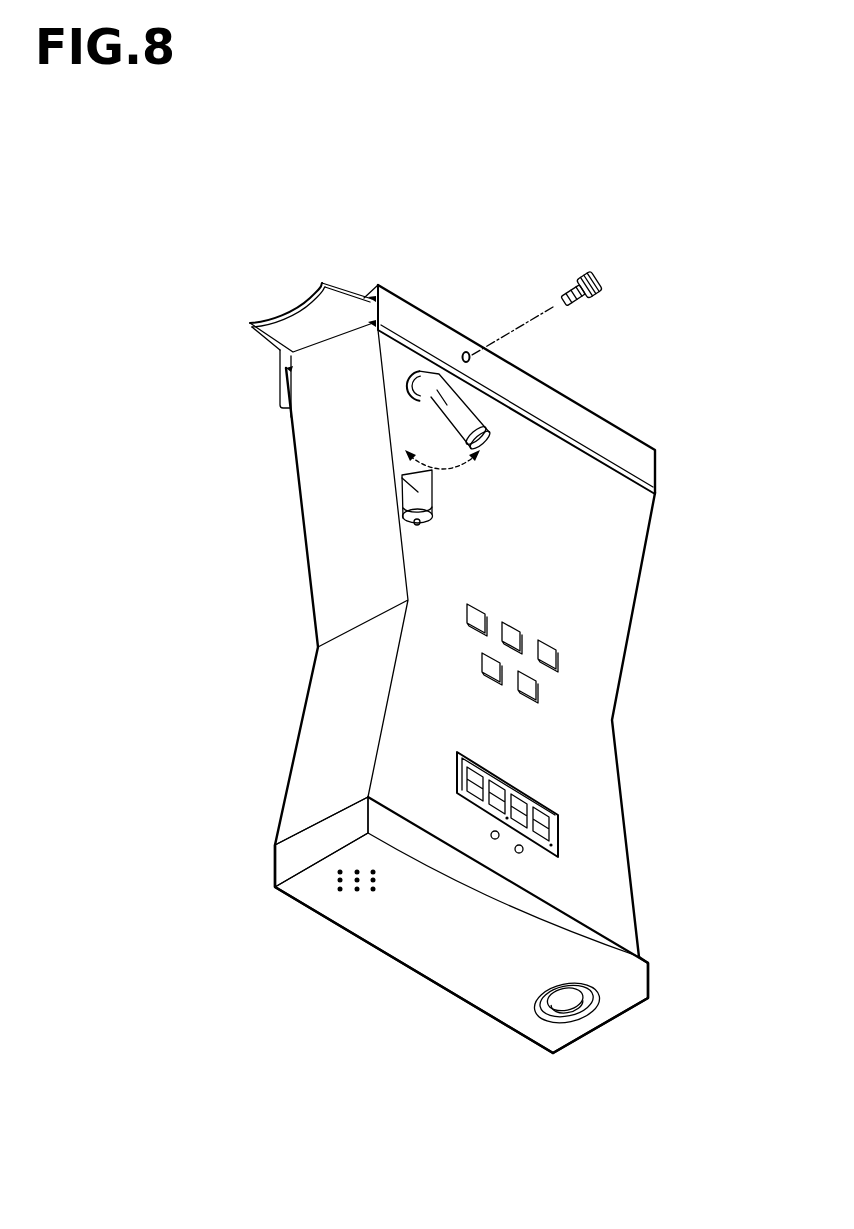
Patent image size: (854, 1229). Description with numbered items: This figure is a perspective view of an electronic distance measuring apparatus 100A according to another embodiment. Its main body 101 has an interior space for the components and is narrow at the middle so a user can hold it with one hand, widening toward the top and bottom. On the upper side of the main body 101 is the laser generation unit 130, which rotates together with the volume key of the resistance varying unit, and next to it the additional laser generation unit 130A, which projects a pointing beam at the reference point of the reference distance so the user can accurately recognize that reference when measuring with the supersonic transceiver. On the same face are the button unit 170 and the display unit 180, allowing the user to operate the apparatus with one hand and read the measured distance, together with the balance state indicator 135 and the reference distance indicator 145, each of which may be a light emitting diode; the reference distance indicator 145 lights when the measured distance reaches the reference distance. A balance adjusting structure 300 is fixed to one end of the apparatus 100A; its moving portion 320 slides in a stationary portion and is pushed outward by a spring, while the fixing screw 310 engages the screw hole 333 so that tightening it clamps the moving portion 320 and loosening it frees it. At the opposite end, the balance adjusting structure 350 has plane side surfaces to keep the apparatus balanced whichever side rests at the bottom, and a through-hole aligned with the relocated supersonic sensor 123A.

The electronic distance measuring apparatus 100A is at (752, 198).
The main body 101 is at (633, 610).
The balance adjusting structure 300 is at (607, 416).
The moving portion 320 is at (325, 282).
The fixing screw 310 is at (583, 272).
The screw hole 333 is at (467, 351).
The laser generation unit 130 is at (445, 407).
The laser generation unit 130A is at (405, 478).
The button unit 170 is at (558, 661).
The display unit 180 is at (556, 822).
The balance state indicator 135 is at (497, 840).
The reference distance indicator 145 is at (522, 852).
The balance adjusting structure 350 is at (410, 970).
The supersonic sensor 123A is at (570, 1008).